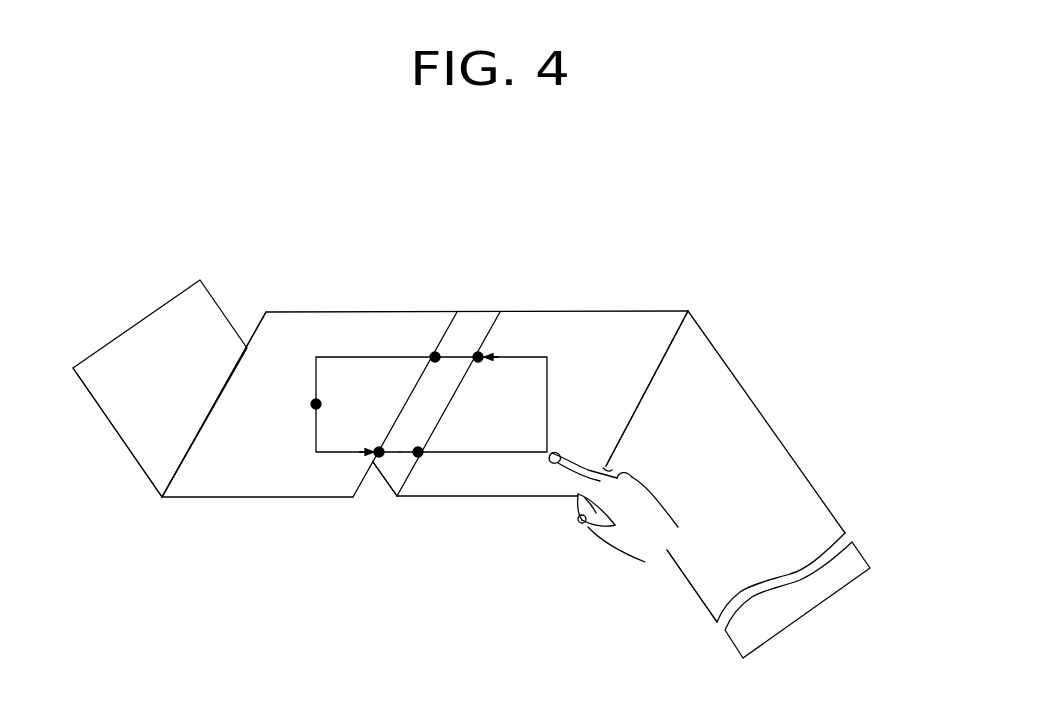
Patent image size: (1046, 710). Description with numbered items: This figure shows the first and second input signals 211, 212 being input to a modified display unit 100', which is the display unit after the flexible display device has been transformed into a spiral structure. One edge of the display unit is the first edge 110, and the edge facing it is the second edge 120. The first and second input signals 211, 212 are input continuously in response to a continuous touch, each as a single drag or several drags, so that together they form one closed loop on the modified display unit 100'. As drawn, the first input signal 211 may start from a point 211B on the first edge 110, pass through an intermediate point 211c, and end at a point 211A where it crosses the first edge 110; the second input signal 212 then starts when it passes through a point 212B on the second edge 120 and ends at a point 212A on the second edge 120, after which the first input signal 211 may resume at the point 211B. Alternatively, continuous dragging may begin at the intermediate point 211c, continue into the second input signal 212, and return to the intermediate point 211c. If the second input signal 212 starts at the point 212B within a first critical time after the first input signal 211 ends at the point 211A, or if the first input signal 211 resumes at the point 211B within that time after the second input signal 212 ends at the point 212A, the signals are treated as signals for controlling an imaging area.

The modified display unit 100' is at (471, 449).
The first edge 110 is at (227, 312).
The second edge 120 is at (213, 403).
The first input signal 211 is at (375, 353).
The second input signal 212 is at (513, 357).
The end point of first input signal 211A is at (358, 438).
The start point of first input signal 211B is at (401, 369).
The intermediate point 211c is at (345, 406).
The end point of second input signal 212A is at (498, 370).
The start point of second input signal 212B is at (451, 443).